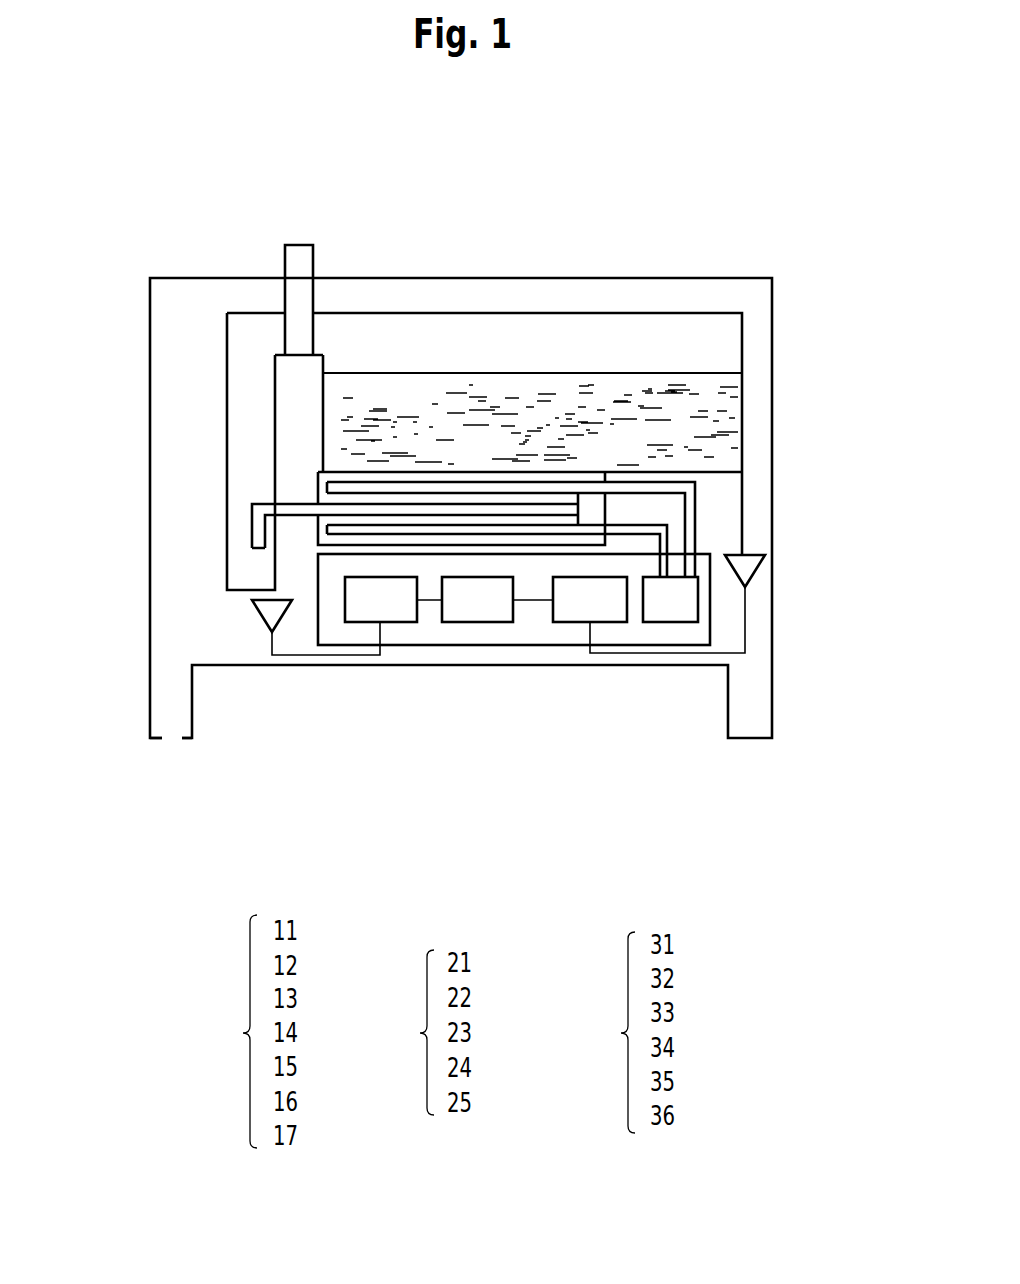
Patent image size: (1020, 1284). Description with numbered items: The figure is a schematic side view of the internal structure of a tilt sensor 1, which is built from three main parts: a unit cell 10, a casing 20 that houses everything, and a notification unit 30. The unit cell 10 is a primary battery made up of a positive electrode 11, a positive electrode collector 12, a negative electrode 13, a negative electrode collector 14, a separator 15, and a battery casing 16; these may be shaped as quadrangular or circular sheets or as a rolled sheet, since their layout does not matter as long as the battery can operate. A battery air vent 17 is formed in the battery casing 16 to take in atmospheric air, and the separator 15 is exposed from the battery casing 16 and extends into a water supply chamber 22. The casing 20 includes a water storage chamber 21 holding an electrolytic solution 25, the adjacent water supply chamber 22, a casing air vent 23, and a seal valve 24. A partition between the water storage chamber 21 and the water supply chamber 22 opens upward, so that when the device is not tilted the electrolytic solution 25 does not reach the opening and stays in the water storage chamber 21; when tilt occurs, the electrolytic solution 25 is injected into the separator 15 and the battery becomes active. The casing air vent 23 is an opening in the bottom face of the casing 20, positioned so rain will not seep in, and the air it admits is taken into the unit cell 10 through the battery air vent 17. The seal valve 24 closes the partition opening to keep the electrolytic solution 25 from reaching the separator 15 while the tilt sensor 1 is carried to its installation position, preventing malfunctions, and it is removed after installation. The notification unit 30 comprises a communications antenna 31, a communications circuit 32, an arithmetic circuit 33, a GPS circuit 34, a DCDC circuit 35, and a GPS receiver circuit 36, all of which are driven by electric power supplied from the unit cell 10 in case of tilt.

The tilt sensor 1 is at (654, 155).
The unit cell 10 is at (455, 730).
The positive electrode 11 is at (327, 497).
The positive electrode collector 12 is at (327, 488).
The negative electrode 13 is at (327, 522).
The negative electrode collector 14 is at (377, 530).
The separator 15 is at (250, 520).
The battery casing 16 is at (607, 520).
The battery air vent 17 is at (597, 508).
The casing 20 is at (710, 277).
The water storage chamber 21 is at (600, 335).
The water supply chamber 22 is at (252, 405).
The casing air vent 23 is at (171, 740).
The seal valve 24 is at (302, 245).
The electrolytic solution 25 is at (480, 382).
The notification unit 30 is at (543, 801).
The communications antenna 31 is at (262, 622).
The communications circuit 32 is at (398, 618).
The arithmetic circuit 33 is at (470, 618).
The GPS circuit 34 is at (570, 622).
The DCDC circuit 35 is at (662, 622).
The GPS receiver circuit 36 is at (755, 582).